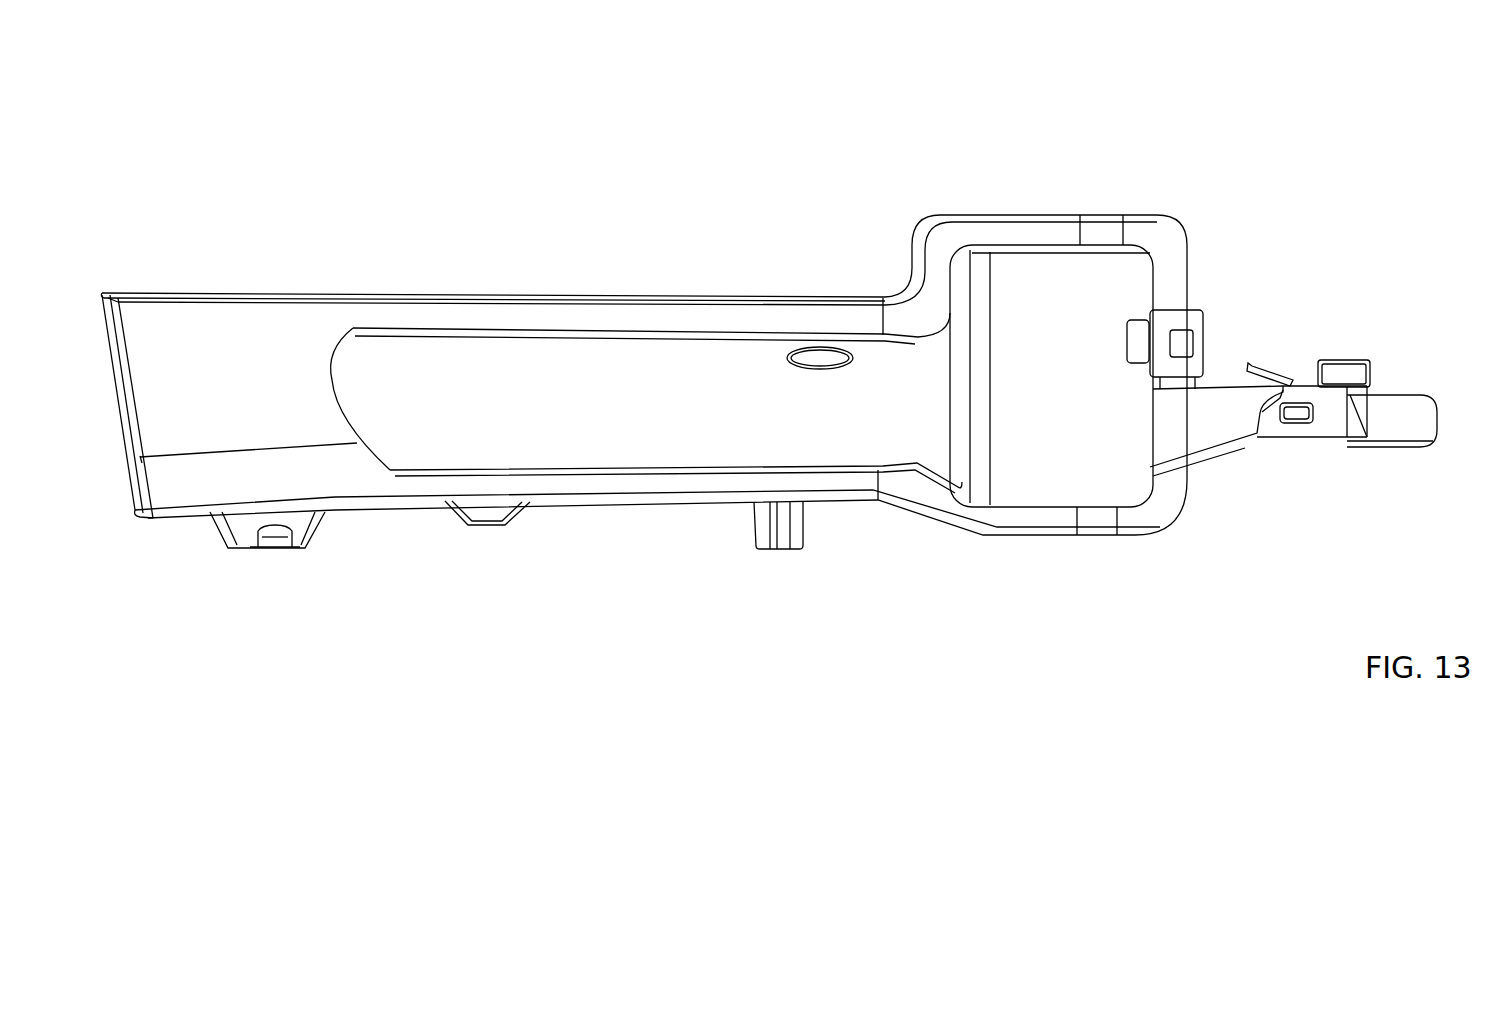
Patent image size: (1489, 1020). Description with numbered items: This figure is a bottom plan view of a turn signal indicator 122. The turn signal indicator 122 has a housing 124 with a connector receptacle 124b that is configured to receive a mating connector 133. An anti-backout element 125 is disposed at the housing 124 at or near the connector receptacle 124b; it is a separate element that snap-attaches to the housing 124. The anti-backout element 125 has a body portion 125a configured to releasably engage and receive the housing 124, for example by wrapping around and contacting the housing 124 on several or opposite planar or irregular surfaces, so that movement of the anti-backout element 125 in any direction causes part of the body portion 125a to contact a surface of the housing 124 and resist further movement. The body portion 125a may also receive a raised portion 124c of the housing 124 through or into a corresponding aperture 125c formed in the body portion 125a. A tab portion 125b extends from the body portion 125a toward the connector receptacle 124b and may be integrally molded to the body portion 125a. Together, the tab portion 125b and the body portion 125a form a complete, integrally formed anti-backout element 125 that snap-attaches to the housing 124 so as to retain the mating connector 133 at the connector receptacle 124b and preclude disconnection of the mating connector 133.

The turn signal indicator 122 is at (906, 175).
The housing 124 is at (1018, 215).
The connector receptacle 124b is at (1135, 330).
The raised portion 124c is at (1287, 423).
The mating connector 133 is at (1200, 313).
The anti-backout element 125 is at (1383, 350).
The body portion 125a is at (1340, 423).
The tab portion 125b is at (1253, 360).
The aperture 125c is at (1313, 423).